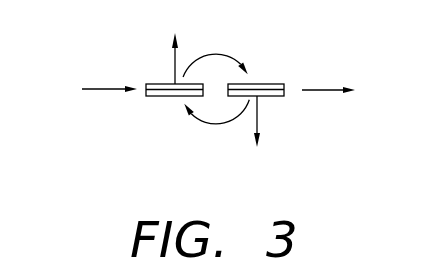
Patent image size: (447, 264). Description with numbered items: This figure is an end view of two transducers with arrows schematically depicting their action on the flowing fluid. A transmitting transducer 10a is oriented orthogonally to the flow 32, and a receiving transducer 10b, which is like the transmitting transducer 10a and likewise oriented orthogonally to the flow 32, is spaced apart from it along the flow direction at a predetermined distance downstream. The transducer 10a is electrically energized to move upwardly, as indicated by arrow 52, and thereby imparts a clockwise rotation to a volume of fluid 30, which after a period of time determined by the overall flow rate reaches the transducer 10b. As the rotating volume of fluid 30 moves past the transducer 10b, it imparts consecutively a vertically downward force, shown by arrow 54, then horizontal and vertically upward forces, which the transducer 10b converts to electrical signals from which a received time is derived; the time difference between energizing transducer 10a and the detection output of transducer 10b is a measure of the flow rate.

The flow 32 is at (97, 90).
The transmitting transducer 10a is at (150, 96).
The receiving transducer 10b is at (263, 84).
The arrow 52 is at (173, 65).
The downward force arrow 54 is at (257, 118).
The volume of fluid 30 is at (211, 124).